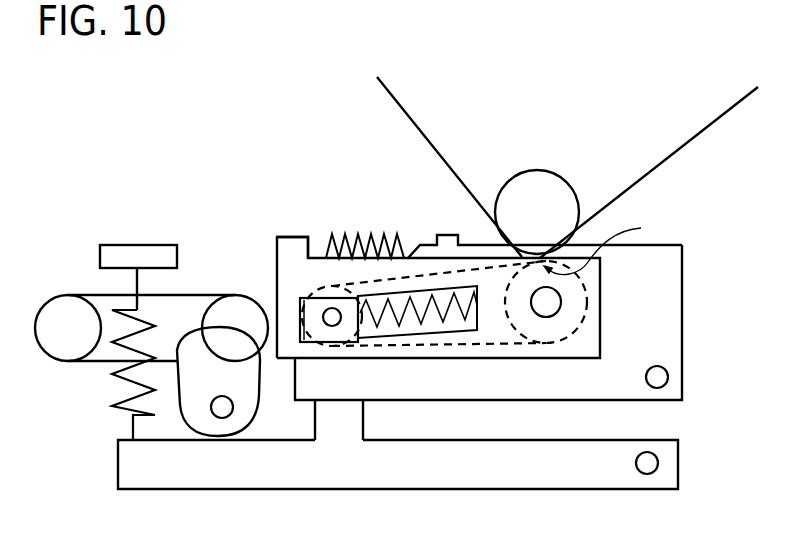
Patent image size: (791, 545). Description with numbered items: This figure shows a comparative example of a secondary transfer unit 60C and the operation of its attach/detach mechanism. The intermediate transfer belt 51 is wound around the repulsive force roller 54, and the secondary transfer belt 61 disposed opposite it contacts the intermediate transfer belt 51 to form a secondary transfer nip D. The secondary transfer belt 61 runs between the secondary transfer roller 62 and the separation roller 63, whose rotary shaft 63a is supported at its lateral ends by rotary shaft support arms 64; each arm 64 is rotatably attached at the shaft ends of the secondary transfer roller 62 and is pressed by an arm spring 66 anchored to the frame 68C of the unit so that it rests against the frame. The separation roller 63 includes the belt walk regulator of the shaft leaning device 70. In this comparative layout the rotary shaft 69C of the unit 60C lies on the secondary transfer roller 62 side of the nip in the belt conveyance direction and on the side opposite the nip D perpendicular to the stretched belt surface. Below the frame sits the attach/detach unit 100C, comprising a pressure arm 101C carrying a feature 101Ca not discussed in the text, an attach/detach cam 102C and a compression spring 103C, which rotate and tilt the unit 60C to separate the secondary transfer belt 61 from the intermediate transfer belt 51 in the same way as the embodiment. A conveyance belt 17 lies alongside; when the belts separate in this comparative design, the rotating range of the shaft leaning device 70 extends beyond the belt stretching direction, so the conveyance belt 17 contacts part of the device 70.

The conveyance belt 17 is at (92, 295).
The intermediate transfer belt 51 is at (704, 132).
The repulsive force roller 54 is at (558, 173).
The secondary transfer nip D is at (601, 244).
The secondary transfer unit 60C is at (694, 279).
The secondary transfer belt 61 is at (445, 350).
The secondary transfer roller 62 is at (588, 287).
The separation roller 63 is at (325, 292).
The rotary shaft 63a is at (310, 296).
The rotary shaft support arm 64 is at (277, 243).
The arm spring 66 is at (326, 240).
The housing lower portion 68C is at (683, 341).
The rotary shaft 69C is at (669, 377).
The shaft leaning device 70 is at (272, 179).
The base frame 100C is at (108, 464).
The base arm 101C is at (681, 460).
The positioning hole 101Ca is at (646, 478).
The cam 102C is at (253, 417).
The spring 103C is at (117, 398).